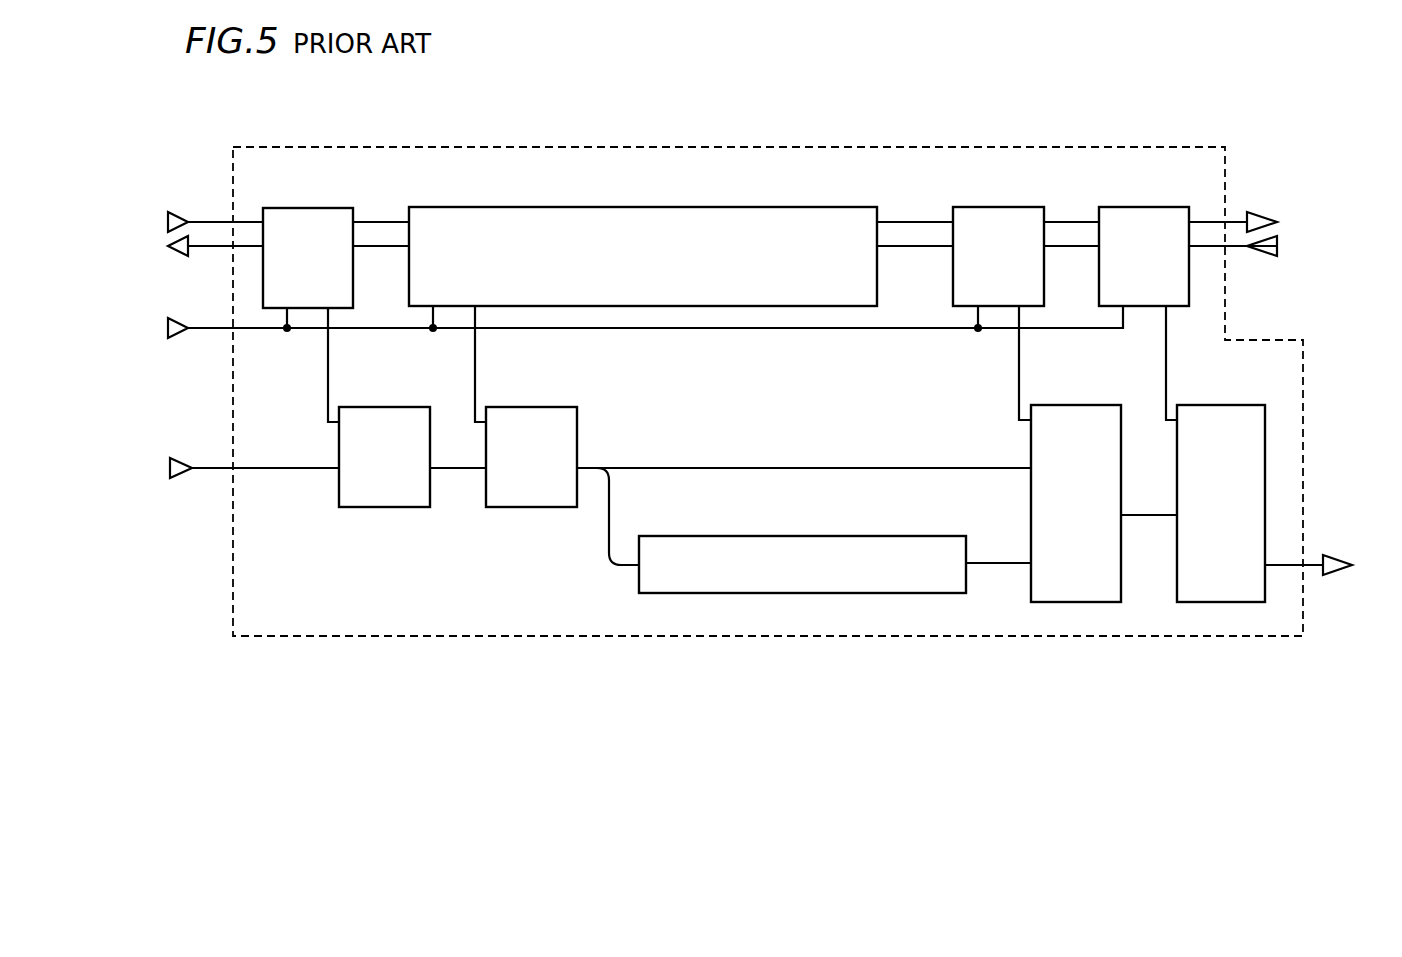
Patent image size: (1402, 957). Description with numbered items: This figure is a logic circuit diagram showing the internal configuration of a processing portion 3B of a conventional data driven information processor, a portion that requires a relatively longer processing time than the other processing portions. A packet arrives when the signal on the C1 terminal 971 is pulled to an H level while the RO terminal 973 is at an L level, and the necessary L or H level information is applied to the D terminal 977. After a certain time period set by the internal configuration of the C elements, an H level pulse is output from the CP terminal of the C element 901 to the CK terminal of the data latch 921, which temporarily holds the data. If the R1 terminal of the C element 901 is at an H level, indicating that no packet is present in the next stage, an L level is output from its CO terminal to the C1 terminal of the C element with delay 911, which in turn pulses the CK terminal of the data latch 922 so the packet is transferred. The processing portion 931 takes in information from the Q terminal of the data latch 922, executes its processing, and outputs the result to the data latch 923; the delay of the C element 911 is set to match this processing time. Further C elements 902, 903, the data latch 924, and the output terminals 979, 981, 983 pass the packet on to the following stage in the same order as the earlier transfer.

The processing portion 3B is at (331, 146).
The C element 901 is at (274, 208).
The carry/ripple stage 902 is at (964, 207).
The carry/ripple stage 903 is at (1110, 207).
The C element with delay 911 is at (545, 207).
The data latch 921 is at (360, 407).
The data latch 922 is at (505, 407).
The data latch 923 is at (1050, 405).
The output register [107:0] 924 is at (1195, 405).
The processing portion 931 is at (680, 536).
The C1 terminal 971 is at (180, 214).
The RO terminal 973 is at (177, 257).
The D terminal 977 is at (180, 458).
The output terminal C0 979 is at (1261, 212).
The output terminal R1 981 is at (1259, 257).
The output terminal Q[107:0] 983 is at (1336, 556).